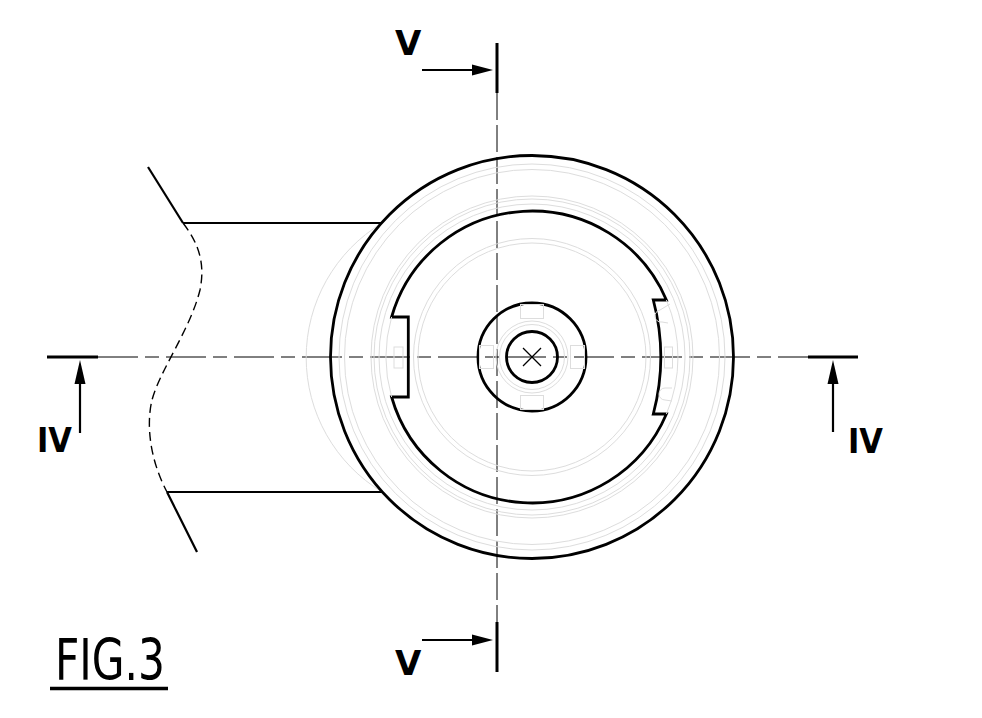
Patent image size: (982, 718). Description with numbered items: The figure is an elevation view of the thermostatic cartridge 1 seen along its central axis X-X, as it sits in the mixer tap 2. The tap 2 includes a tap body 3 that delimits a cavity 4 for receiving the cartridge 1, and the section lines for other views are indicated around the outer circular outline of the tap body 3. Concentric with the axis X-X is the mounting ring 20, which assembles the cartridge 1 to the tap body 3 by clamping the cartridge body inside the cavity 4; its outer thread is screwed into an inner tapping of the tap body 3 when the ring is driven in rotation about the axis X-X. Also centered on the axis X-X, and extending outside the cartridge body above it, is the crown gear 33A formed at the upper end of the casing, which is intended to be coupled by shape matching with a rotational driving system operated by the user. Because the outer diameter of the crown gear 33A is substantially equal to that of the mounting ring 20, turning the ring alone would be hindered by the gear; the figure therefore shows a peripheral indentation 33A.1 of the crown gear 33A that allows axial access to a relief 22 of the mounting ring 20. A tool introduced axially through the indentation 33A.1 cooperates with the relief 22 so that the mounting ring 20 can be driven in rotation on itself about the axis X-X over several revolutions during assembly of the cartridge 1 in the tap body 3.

The thermostatic cartridge 1 is at (600, 236).
The mixer tap 2 is at (240, 200).
The tap body 3 is at (543, 175).
The cavity 4 is at (446, 268).
The mounting ring 20 is at (690, 340).
The relief 22 is at (662, 385).
The crown gear 33A is at (635, 447).
The peripheral indentation 33A.1 is at (668, 323).
The central axis X-X is at (532, 358).